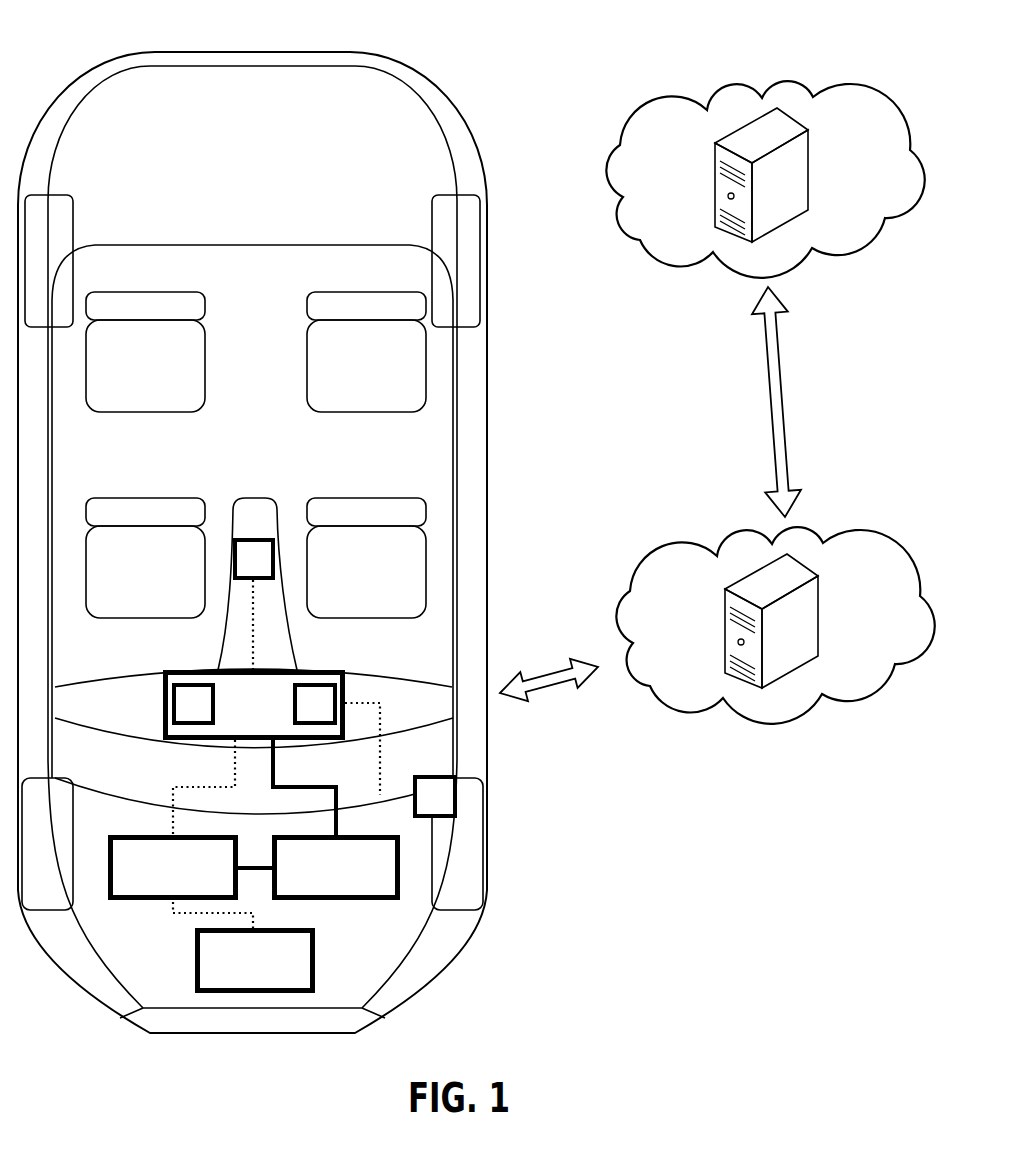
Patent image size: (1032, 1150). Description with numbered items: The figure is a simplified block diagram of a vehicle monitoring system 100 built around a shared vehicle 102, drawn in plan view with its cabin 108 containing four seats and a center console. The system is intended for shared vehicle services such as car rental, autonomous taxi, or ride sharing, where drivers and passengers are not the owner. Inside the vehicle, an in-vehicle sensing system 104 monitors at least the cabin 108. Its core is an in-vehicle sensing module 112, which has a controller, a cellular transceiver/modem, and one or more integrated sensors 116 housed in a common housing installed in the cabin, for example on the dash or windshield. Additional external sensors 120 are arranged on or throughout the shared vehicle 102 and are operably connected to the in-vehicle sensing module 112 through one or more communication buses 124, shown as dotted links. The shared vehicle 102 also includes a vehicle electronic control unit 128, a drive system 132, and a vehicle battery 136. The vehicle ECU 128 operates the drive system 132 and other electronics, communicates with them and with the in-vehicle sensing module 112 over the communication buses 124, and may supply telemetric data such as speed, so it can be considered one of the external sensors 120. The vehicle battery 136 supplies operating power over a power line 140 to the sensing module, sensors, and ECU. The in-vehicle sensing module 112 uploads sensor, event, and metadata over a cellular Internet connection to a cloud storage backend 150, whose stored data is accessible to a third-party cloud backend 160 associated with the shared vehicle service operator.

The vehicle monitoring system 100 is at (702, 847).
The shared vehicle 102 is at (165, 52).
The in-vehicle sensing system 104 is at (362, 685).
The cabin 108 is at (423, 447).
The in-vehicle sensing module 112 is at (170, 670).
The integrated sensors 116 is at (165, 705).
The external sensors 120 is at (246, 538).
The communication buses 124 is at (255, 613).
The vehicle electronic control unit 128 is at (127, 833).
The drive system 132 is at (195, 962).
The vehicle battery 136 is at (348, 902).
The power line 140 is at (298, 785).
The cloud storage backend 150 is at (670, 545).
The third-party cloud backend 160 is at (730, 85).